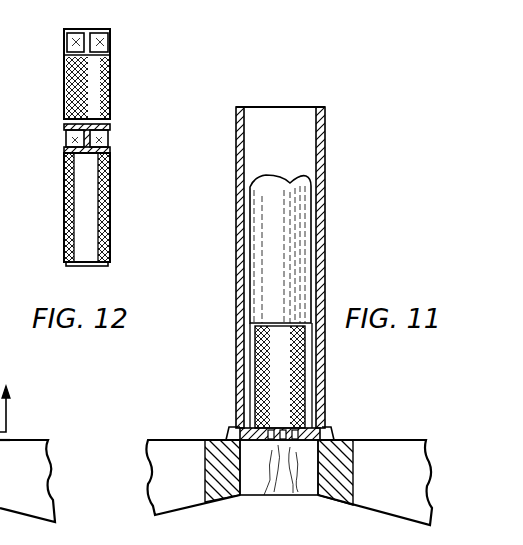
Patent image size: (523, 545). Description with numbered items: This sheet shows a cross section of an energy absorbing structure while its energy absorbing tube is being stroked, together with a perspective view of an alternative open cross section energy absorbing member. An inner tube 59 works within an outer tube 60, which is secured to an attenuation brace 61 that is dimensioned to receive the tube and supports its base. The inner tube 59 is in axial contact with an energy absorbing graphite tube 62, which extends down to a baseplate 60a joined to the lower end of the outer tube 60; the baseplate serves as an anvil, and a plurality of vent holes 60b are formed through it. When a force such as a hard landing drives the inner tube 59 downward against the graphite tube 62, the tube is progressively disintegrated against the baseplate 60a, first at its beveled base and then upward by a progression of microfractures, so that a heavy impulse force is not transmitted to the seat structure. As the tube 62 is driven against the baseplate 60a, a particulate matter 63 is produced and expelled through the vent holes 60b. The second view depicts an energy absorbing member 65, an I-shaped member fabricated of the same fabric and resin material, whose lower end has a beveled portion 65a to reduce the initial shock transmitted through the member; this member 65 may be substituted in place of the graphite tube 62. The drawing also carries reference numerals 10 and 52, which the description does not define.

In FIG. 11, the heating apparatus 10 is at (11, 401).
In FIG. 11, the wall opening 52 is at (62, 446).
In FIG. 11, the inner tube 59 is at (288, 250).
In FIG. 11, the outer tube 60 is at (326, 168).
In FIG. 11, the baseplate 60a is at (10, 453).
In FIG. 11, the vent holes 60b is at (268, 441).
In FIG. 11, the attenuation brace 61 is at (363, 448).
In FIG. 11, the energy absorbing graphite tube 62 is at (282, 358).
In FIG. 11, the particulate matter 63 is at (266, 492).
In FIG. 12, the energy absorbing member 65 is at (68, 166).
In FIG. 12, the beveled portion 65a is at (68, 266).